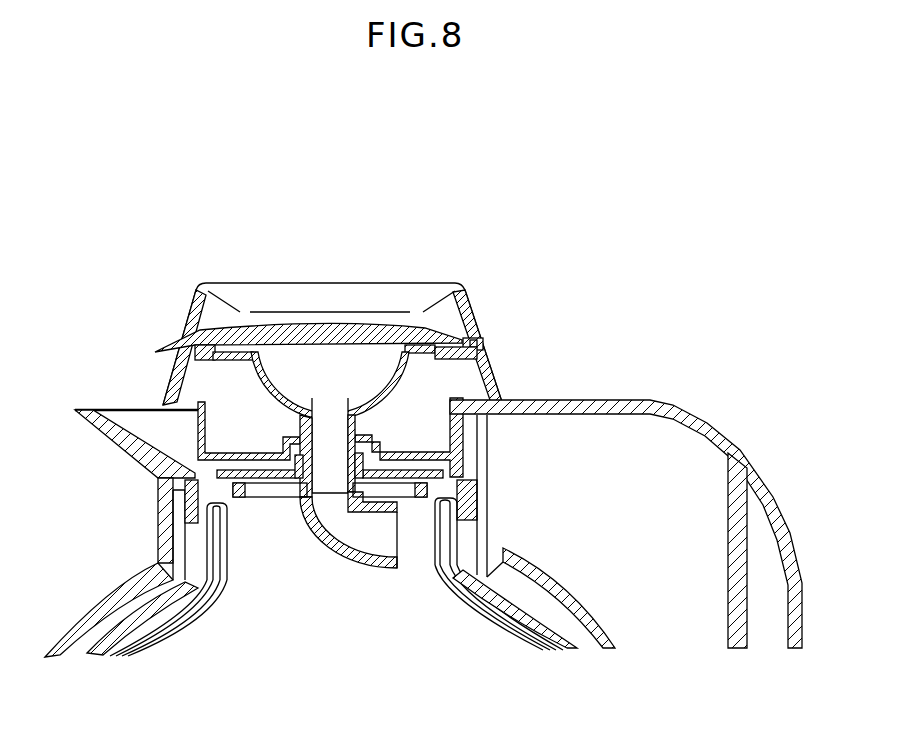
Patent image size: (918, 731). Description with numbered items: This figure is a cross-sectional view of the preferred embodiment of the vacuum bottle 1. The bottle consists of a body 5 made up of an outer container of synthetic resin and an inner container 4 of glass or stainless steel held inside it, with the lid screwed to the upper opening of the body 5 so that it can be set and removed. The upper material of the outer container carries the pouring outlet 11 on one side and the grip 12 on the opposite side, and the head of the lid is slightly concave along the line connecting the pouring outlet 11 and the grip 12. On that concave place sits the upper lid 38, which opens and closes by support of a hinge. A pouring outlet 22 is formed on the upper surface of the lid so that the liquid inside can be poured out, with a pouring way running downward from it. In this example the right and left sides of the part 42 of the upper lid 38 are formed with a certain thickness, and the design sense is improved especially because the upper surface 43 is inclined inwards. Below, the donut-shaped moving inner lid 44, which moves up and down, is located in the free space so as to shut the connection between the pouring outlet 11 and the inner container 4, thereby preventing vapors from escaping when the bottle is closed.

The vacuum bottle 1 is at (673, 220).
The inner container 4 is at (540, 603).
The body 5 is at (600, 617).
The pouring outlet 11 is at (117, 418).
The grip 12 is at (763, 467).
The pouring outlet 22 is at (292, 360).
The upper lid 38 is at (368, 325).
The part of the upper lid 42 is at (452, 278).
The upper surface 43 is at (253, 293).
The moving inner lid 44 is at (265, 468).